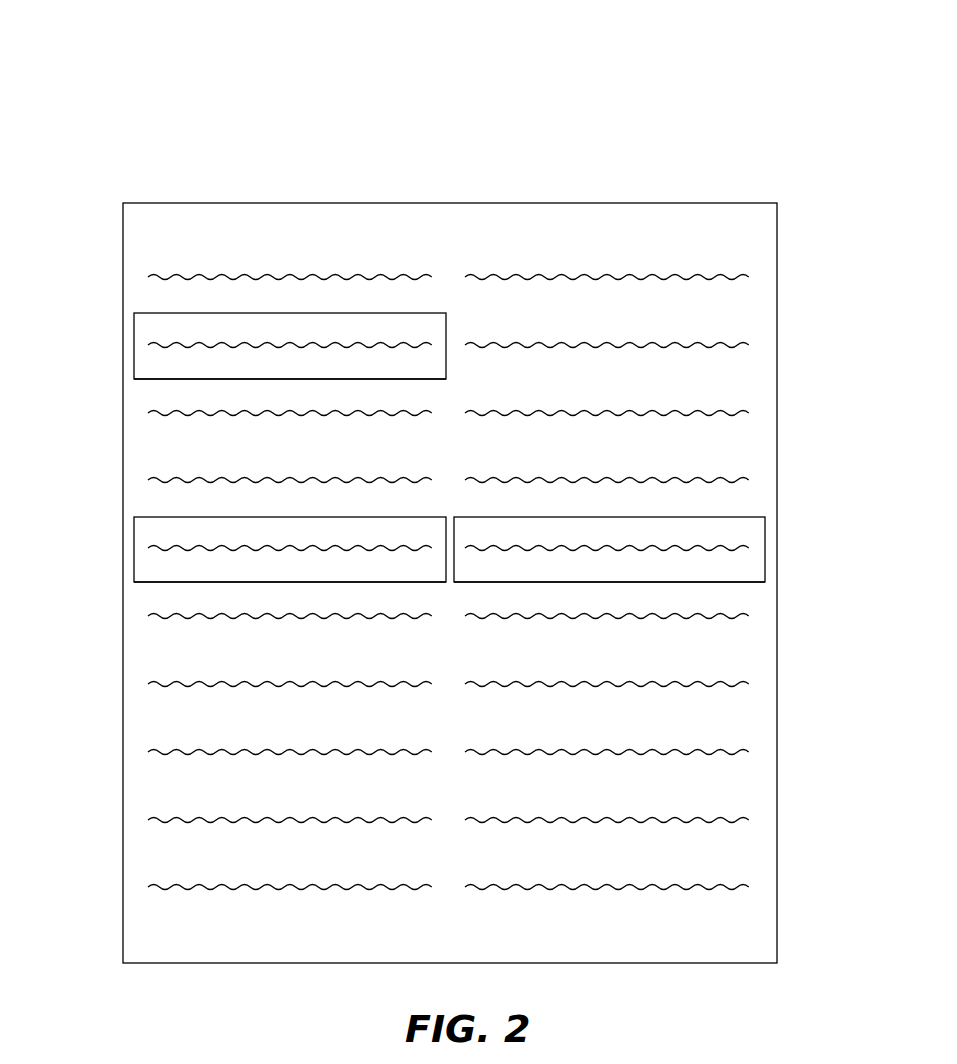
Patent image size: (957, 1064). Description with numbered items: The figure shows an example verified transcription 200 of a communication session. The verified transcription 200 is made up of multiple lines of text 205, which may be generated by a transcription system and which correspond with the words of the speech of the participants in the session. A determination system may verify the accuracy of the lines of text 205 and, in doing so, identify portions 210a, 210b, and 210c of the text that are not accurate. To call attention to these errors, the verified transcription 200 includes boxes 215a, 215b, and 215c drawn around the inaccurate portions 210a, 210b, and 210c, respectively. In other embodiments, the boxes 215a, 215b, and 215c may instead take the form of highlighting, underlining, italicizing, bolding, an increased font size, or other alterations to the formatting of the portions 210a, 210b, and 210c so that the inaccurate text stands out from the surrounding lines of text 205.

The verified transcription 200 is at (697, 61).
The lines of text 205 is at (790, 203).
The portion of the text 210a is at (138, 345).
The portion of the text 210b is at (138, 548).
The portion of the text 210c is at (762, 548).
The box 215a is at (116, 379).
The box 215b is at (116, 582).
The box 215c is at (784, 582).